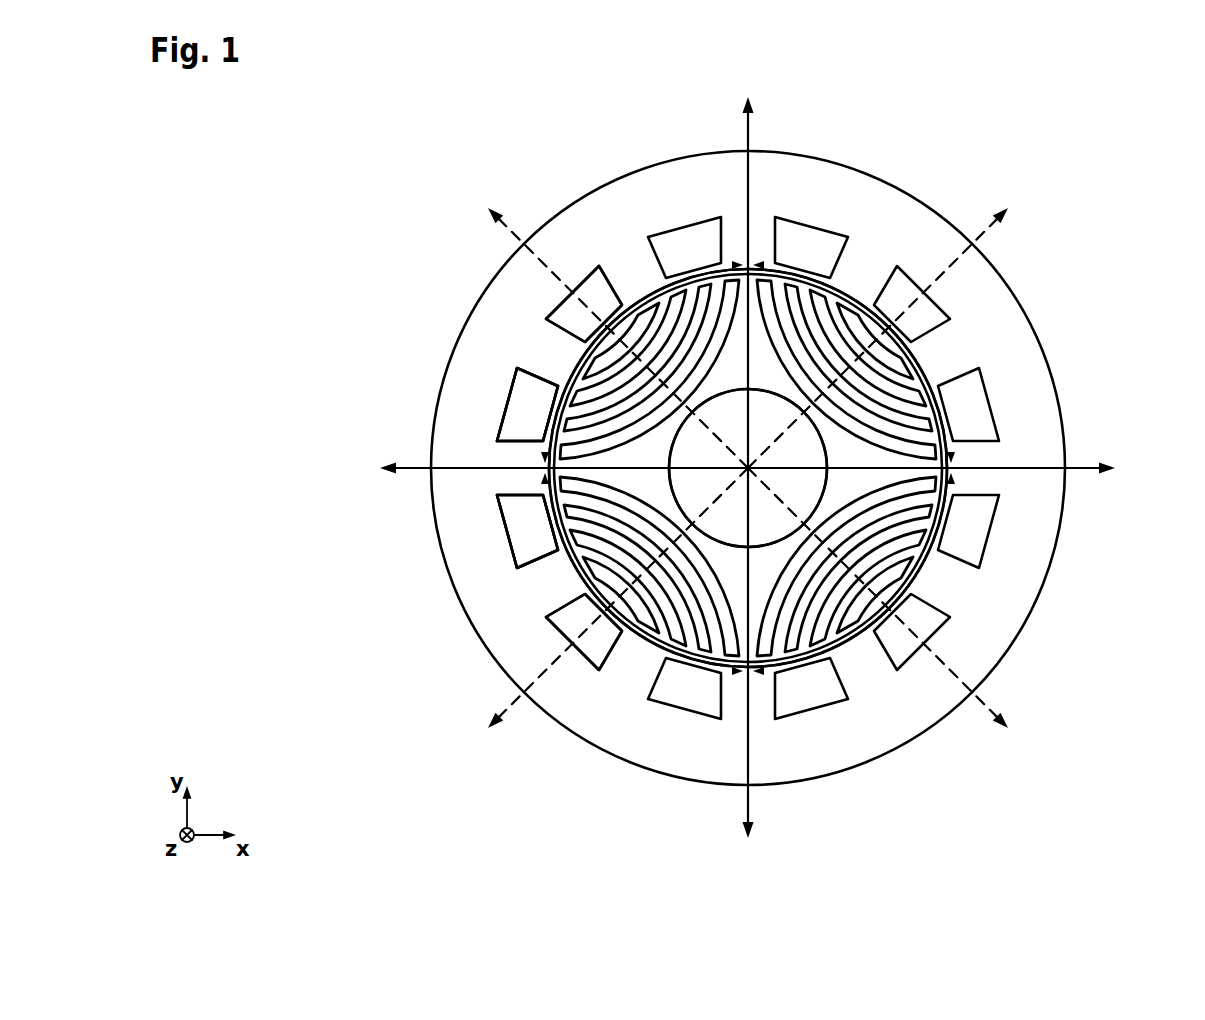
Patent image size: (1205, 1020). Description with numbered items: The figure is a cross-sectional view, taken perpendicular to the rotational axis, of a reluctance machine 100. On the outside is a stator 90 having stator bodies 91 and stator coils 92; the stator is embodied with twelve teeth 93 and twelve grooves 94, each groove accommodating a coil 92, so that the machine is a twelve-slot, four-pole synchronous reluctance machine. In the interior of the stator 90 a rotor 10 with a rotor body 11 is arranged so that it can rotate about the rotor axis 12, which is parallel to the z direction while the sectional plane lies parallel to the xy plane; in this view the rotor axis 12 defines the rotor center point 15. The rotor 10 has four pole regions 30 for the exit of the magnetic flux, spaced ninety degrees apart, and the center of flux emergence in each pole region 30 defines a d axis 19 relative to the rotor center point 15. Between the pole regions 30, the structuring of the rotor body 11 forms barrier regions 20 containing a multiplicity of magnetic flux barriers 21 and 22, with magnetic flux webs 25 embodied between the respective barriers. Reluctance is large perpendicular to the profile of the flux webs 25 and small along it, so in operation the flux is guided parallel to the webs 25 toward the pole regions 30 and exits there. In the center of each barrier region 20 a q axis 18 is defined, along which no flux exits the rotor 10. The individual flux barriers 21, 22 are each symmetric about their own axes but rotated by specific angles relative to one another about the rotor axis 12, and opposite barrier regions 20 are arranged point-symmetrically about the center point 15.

The reluctance machine 100 is at (728, 486).
The stator 90 is at (748, 437).
The stator body 91 is at (748, 375).
The barrier region 20 is at (771, 428).
The stator coil 92 is at (497, 440).
The tooth 93 is at (693, 555).
The groove 94 is at (492, 570).
The rotor 10 is at (832, 466).
The rotor body 11 is at (899, 433).
The rotor axis 12 is at (752, 653).
The rotor center point 15 is at (748, 468).
The magnetic flux barrier 21 is at (853, 274).
The magnetic flux barrier 22 is at (860, 327).
The magnetic flux web 25 is at (925, 576).
The pole region 30 is at (749, 468).
The q axis 18 is at (751, 490).
The d axis 19 is at (744, 487).